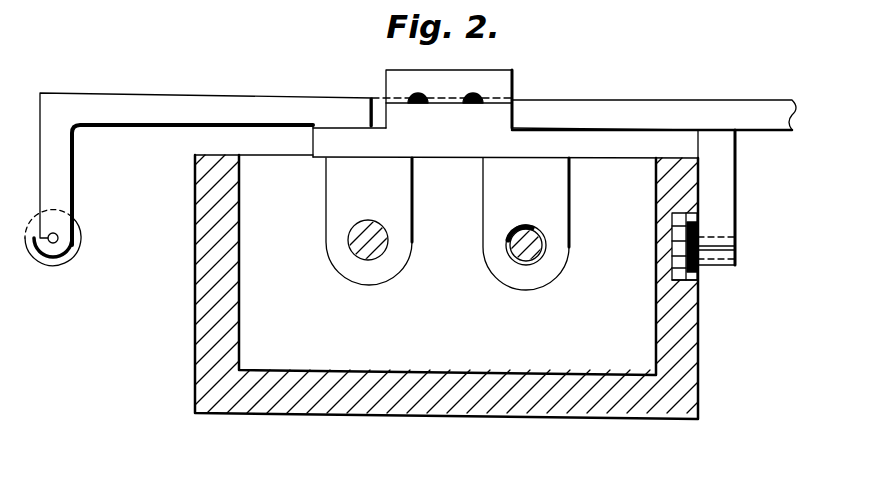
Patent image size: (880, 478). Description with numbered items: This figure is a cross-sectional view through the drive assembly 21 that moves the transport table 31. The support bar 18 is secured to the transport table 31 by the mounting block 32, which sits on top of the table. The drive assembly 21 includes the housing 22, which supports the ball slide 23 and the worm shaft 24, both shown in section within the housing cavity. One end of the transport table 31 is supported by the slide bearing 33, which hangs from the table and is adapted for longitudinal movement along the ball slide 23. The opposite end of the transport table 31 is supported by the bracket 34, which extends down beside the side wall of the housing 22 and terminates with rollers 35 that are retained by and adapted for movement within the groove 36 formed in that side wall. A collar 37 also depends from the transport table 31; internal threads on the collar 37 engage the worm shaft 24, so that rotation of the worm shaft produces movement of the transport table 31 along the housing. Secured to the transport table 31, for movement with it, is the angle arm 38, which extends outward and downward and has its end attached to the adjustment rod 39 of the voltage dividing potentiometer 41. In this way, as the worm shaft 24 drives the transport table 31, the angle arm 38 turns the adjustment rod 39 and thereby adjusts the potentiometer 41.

The support bar 18 is at (727, 112).
The drive assembly 21 is at (186, 394).
The housing 22 is at (207, 335).
The ball slide 23 is at (362, 237).
The worm shaft 24 is at (512, 231).
The transport table 31 is at (547, 138).
The mounting block 32 is at (468, 79).
The slide bearing 33 is at (355, 272).
The bracket 34 is at (725, 168).
The rollers 35 is at (700, 236).
The groove 36 is at (680, 288).
The collar 37 is at (493, 247).
The angle arm 38 is at (143, 100).
The adjustment rod 39 is at (60, 237).
The voltage dividing potentiometer 41 is at (78, 254).